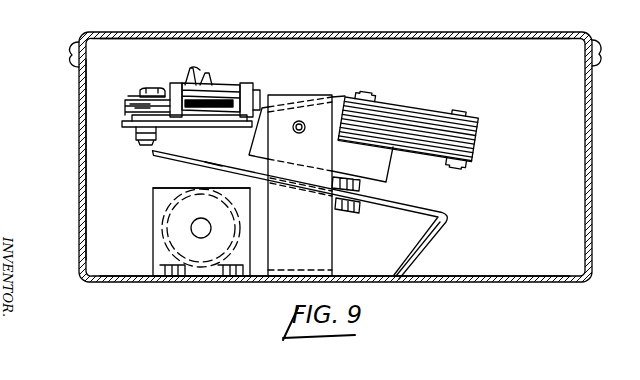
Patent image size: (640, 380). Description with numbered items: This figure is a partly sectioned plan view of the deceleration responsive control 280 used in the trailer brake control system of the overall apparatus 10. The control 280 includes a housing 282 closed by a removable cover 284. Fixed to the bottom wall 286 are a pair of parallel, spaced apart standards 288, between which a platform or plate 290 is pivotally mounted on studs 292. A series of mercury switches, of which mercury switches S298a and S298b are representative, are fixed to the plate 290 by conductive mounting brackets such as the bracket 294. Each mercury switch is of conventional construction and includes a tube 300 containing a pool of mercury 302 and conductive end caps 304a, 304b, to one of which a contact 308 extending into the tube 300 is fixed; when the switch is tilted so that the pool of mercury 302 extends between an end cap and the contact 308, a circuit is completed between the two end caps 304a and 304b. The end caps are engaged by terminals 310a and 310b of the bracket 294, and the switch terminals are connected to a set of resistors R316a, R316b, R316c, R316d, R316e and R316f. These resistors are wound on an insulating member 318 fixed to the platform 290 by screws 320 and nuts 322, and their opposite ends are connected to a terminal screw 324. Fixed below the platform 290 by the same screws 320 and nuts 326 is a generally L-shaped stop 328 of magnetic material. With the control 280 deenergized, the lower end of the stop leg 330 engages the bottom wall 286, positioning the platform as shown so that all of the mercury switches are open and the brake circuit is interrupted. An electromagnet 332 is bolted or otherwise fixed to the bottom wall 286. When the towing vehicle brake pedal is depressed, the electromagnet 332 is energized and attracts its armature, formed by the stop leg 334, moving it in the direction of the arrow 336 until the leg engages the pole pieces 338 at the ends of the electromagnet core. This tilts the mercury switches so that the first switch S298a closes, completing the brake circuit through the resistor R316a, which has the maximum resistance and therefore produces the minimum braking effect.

The apparatus 10 is at (76, 73).
The deceleration responsive control 280 is at (74, 157).
The housing 282 is at (80, 232).
The removable cover 284 is at (191, 33).
The bottom wall 286 is at (412, 283).
The standards 288 is at (333, 250).
The platform or plate 290 is at (375, 163).
The studs 292 is at (293, 132).
The conductive mounting bracket 294 is at (124, 115).
The tube 300 is at (202, 82).
The pool of mercury 302 is at (200, 125).
The conductive end cap 304a is at (247, 84).
The conductive end cap 304b is at (172, 88).
The contact 308 is at (215, 108).
The terminal 310a is at (256, 97).
The terminal 310b is at (165, 98).
The mercury switch S298a is at (210, 82).
The mercury switch S298b is at (205, 80).
The insulating member 318 is at (475, 147).
The resistor R316a is at (411, 114).
The resistor R316b is at (421, 122).
The resistor R316c is at (432, 128).
The resistor R316d is at (441, 134).
The resistor R316e is at (462, 150).
The resistor R316f is at (457, 162).
The screw 320 is at (370, 76).
The terminal screw 324 is at (451, 174).
The nut 322 is at (353, 190).
The nut 326 is at (349, 212).
The L-shaped stop 328 is at (252, 182).
The stop leg 330 is at (424, 256).
The electromagnet 332 is at (149, 214).
The stop leg 334 is at (216, 168).
The arrow 336 is at (168, 182).
The pole pieces 338 is at (214, 258).